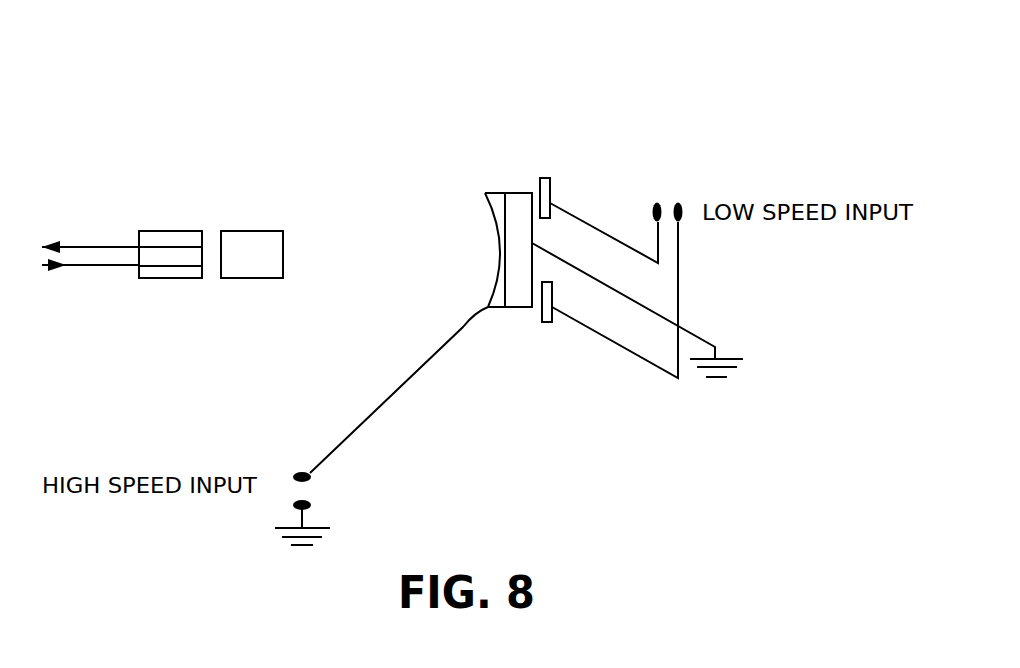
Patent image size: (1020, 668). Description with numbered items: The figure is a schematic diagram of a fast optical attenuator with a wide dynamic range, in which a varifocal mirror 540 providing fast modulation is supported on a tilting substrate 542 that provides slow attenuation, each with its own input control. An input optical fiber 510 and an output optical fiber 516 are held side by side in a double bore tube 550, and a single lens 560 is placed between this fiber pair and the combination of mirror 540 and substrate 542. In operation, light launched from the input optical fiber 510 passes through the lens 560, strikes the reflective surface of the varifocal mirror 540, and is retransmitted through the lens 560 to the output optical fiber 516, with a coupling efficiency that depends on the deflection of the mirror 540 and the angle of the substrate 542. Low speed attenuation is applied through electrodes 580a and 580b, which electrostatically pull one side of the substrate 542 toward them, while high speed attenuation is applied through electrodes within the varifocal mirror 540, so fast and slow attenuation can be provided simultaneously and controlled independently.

The input optical fiber 510 is at (100, 245).
The output optical fiber 516 is at (105, 267).
The double bore tube 550 is at (183, 231).
The lens 560 is at (268, 231).
The varifocal mirror 540 is at (498, 193).
The tilting substrate 542 is at (525, 193).
The electrode 580a is at (551, 188).
The electrode 580b is at (548, 322).